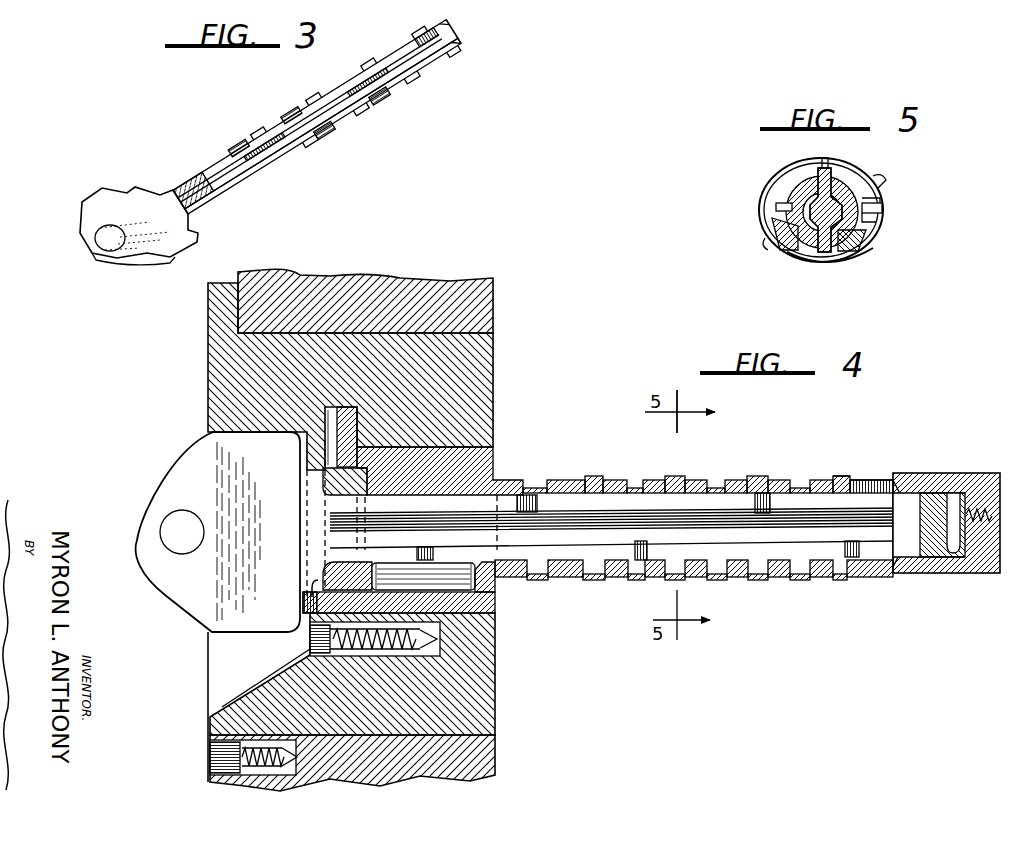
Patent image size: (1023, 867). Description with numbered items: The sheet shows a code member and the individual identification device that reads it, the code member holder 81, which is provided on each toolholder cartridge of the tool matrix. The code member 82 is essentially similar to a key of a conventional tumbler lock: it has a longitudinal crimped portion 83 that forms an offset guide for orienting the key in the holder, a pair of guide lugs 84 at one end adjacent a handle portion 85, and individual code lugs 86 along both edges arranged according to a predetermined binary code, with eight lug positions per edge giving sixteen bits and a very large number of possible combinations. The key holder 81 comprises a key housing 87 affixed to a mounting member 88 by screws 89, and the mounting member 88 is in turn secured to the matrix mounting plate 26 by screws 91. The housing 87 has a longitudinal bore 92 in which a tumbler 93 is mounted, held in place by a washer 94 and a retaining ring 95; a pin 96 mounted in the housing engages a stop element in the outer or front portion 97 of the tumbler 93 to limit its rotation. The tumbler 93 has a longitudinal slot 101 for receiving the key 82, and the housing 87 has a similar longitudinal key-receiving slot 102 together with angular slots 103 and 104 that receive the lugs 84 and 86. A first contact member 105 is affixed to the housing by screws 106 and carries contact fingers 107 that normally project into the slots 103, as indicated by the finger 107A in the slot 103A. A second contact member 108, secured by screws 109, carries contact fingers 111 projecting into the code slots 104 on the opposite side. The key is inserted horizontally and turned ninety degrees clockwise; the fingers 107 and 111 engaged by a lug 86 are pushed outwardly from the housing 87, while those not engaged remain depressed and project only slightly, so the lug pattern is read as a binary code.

In FIG. 4, the matrix mounting plate 26 is at (478, 312).
In FIG. 5, the code member holder 81 is at (752, 206).
In FIG. 4, the code member holder 81 is at (546, 388).
In FIG. 3, the code member 82 is at (193, 167).
In FIG. 5, the code member 82 is at (825, 255).
In FIG. 4, the code member 82 is at (497, 480).
In FIG. 3, the longitudinal crimped portion 83 is at (460, 35).
In FIG. 5, the longitudinal crimped portion 83 is at (898, 208).
In FIG. 3, the guide lugs 84 is at (245, 132).
In FIG. 3, the handle portion 85 is at (145, 247).
In FIG. 4, the handle portion 85 is at (193, 473).
In FIG. 3, the code lugs 86 is at (377, 52).
In FIG. 5, the code lugs 86 is at (838, 175).
In FIG. 5, the key housing 87 is at (795, 250).
In FIG. 4, the key housing 87 is at (497, 604).
In FIG. 4, the mounting member 88 is at (477, 700).
In FIG. 4, the screws 89 is at (307, 638).
In FIG. 4, the screws 91 is at (208, 753).
In FIG. 4, the longitudinal bore 92 is at (960, 487).
In FIG. 4, the tumbler 93 is at (933, 547).
In FIG. 4, the washer 94 is at (320, 580).
In FIG. 4, the retaining ring 95 is at (310, 597).
In FIG. 4, the pin 96 is at (333, 415).
In FIG. 4, the outer or front portion 97 is at (333, 567).
In FIG. 5, the longitudinal slot 101 is at (843, 190).
In FIG. 4, the longitudinal slot 101 is at (908, 547).
In FIG. 5, the longitudinal key-receiving slot 102 is at (785, 212).
In FIG. 5, the angular slots 103 is at (795, 188).
In FIG. 4, the slot 103A is at (853, 477).
In FIG. 5, the angular slots 104 is at (852, 245).
In FIG. 5, the first contact member 105 is at (770, 228).
In FIG. 5, the screws 106 is at (768, 250).
In FIG. 5, the contact fingers 107 is at (762, 192).
In FIG. 4, the contact finger 107A is at (838, 480).
In FIG. 5, the second contact member 108 is at (898, 192).
In FIG. 5, the screws 109 is at (880, 185).
In FIG. 5, the contact fingers 111 is at (876, 240).